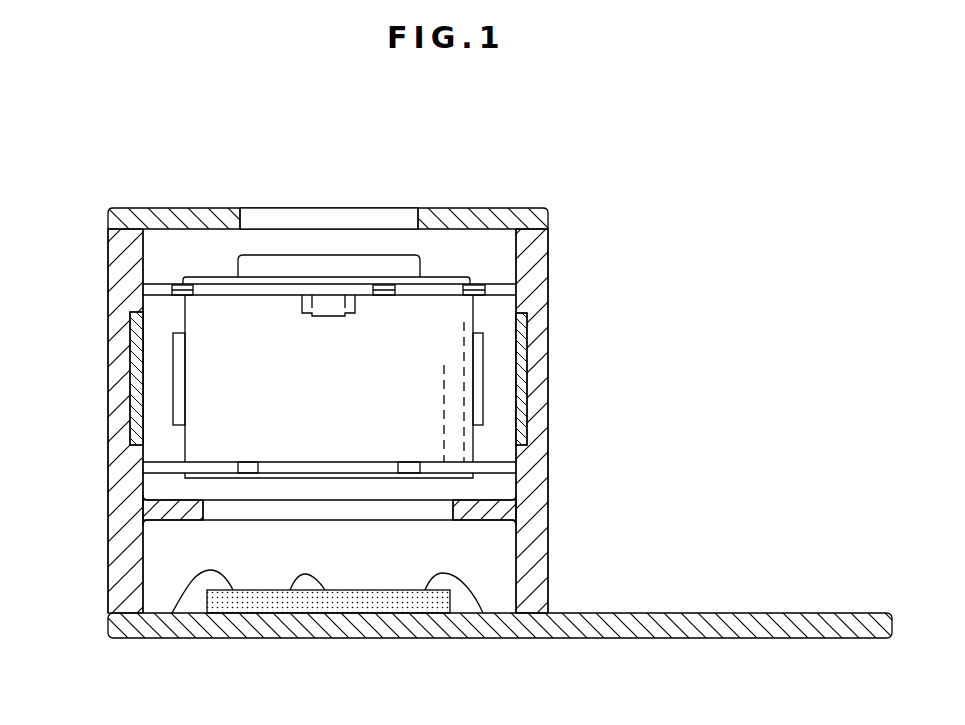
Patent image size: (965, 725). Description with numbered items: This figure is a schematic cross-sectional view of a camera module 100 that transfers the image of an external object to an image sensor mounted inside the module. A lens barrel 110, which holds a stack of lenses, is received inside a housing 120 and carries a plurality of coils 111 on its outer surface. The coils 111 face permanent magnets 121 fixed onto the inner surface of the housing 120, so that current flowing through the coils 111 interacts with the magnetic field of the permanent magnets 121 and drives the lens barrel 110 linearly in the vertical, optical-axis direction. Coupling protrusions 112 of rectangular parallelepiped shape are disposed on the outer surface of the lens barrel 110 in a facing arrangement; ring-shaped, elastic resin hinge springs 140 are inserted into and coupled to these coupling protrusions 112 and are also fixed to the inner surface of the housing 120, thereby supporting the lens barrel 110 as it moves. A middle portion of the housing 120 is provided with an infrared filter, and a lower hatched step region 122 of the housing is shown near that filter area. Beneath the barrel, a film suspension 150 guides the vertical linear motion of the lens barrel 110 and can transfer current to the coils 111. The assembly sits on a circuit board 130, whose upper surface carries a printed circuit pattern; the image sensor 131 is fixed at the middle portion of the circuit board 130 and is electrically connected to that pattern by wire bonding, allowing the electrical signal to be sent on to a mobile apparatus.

The camera module 100 is at (86, 131).
The lens barrel 110 is at (459, 349).
The coils 111 is at (480, 387).
The coupling protrusions 112 is at (352, 296).
The housing 120 is at (552, 268).
The permanent magnets 121 is at (522, 423).
The base 122 is at (227, 516).
The circuit board 130 is at (732, 608).
The image sensor 131 is at (300, 578).
The hinge springs 140 is at (489, 279).
The film suspension 150 is at (494, 478).